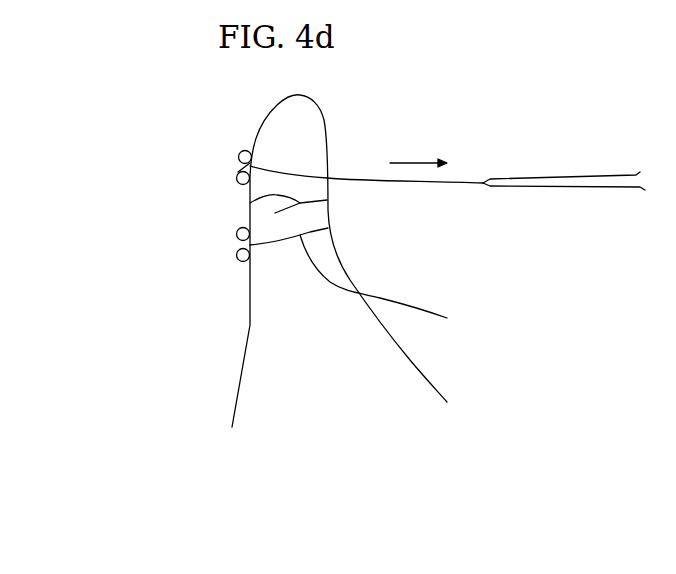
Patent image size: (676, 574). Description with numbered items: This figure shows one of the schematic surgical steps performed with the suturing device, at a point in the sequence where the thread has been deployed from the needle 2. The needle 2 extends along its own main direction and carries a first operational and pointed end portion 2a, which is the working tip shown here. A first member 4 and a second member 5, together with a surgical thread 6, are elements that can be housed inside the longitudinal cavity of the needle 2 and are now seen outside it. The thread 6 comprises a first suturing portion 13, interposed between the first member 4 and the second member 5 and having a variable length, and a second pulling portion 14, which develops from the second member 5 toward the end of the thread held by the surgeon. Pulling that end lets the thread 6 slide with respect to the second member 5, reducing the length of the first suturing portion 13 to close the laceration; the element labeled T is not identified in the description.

The needle 2 is at (563, 166).
The first operational and pointed end portion 2a is at (488, 187).
The first member 4 is at (203, 266).
The second member 5 is at (208, 142).
The surgical thread 6 is at (277, 250).
The first suturing portion 13 is at (387, 287).
The second pulling portion 14 is at (365, 178).
The tape T is at (250, 203).